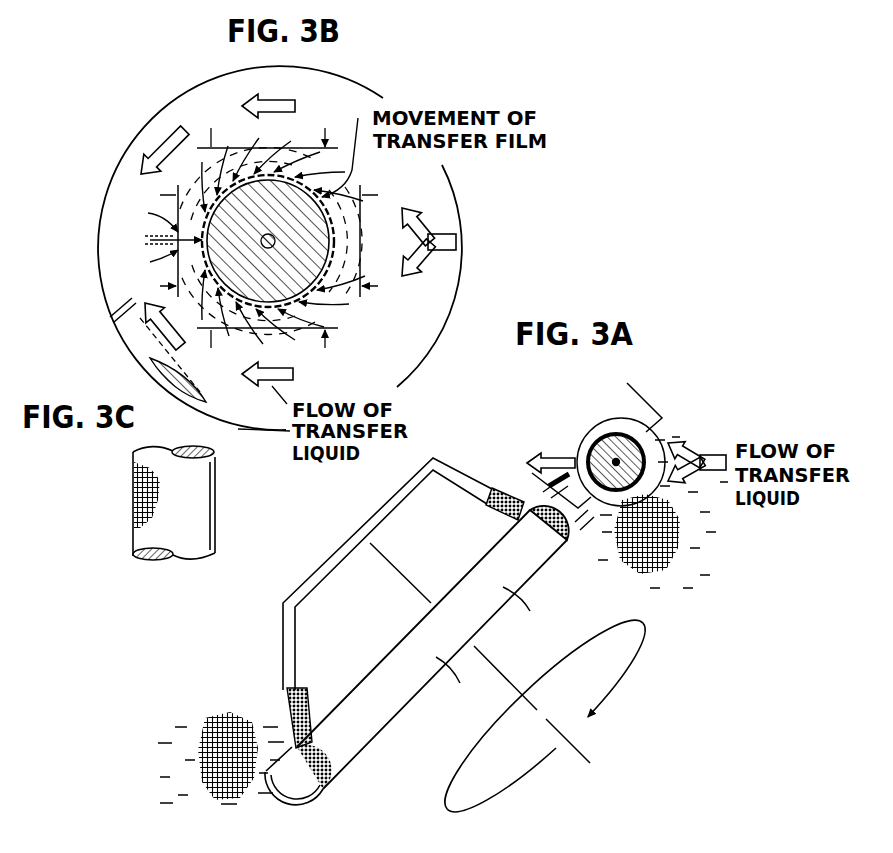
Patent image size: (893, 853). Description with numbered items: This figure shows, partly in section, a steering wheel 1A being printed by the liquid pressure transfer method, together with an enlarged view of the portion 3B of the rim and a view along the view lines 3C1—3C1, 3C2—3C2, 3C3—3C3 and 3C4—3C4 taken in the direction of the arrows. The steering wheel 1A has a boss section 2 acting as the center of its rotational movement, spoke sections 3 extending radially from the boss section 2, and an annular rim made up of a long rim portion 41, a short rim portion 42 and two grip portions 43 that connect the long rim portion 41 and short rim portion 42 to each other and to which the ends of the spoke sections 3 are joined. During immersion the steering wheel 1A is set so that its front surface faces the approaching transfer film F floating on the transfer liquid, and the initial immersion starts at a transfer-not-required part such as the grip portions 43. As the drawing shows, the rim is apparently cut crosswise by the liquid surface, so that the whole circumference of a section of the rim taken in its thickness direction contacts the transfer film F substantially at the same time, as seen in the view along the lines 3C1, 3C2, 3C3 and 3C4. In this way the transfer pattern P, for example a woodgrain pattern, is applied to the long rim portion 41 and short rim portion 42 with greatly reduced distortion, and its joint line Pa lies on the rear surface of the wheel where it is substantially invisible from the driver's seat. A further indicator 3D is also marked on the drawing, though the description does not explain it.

In FIG. 3B, the view line 3C1— 3C1 is at (269, 121).
In FIG. 3B, the view line 3C2— 3C2 is at (408, 241).
In FIG. 3B, the view line 3C3— 3C3 is at (269, 357).
In FIG. 3B, the view line 3C4— 3C4 is at (143, 238).
In FIG. 3B, the joint line Pa is at (208, 232).
In FIG. 3B, the transfer pattern P is at (307, 254).
In FIG. 3A, the transfer pattern P is at (607, 436).
In FIG. 3C, the transfer pattern P is at (157, 498).
In FIG. 3B, the long rim portion 41 is at (212, 399).
In FIG. 3A, the long rim portion 41 is at (578, 523).
In FIG. 3C, the long rim portion 41 is at (197, 496).
In FIG. 3B, the transfer film F is at (390, 347).
In FIG. 3A, the transfer film F is at (443, 620).
In FIG. 3A, the portion 3B is at (583, 430).
In FIG. 3A, the section line 3D- 3D is at (574, 434).
In FIG. 3A, the boss section 2 is at (375, 520).
In FIG. 3A, the spoke sections 3 is at (468, 483).
In FIG. 3A, the grip portions 43 is at (433, 647).
In FIG. 3A, the steering wheel 1A is at (480, 653).
In FIG. 3A, the short rim portion 42 is at (303, 793).